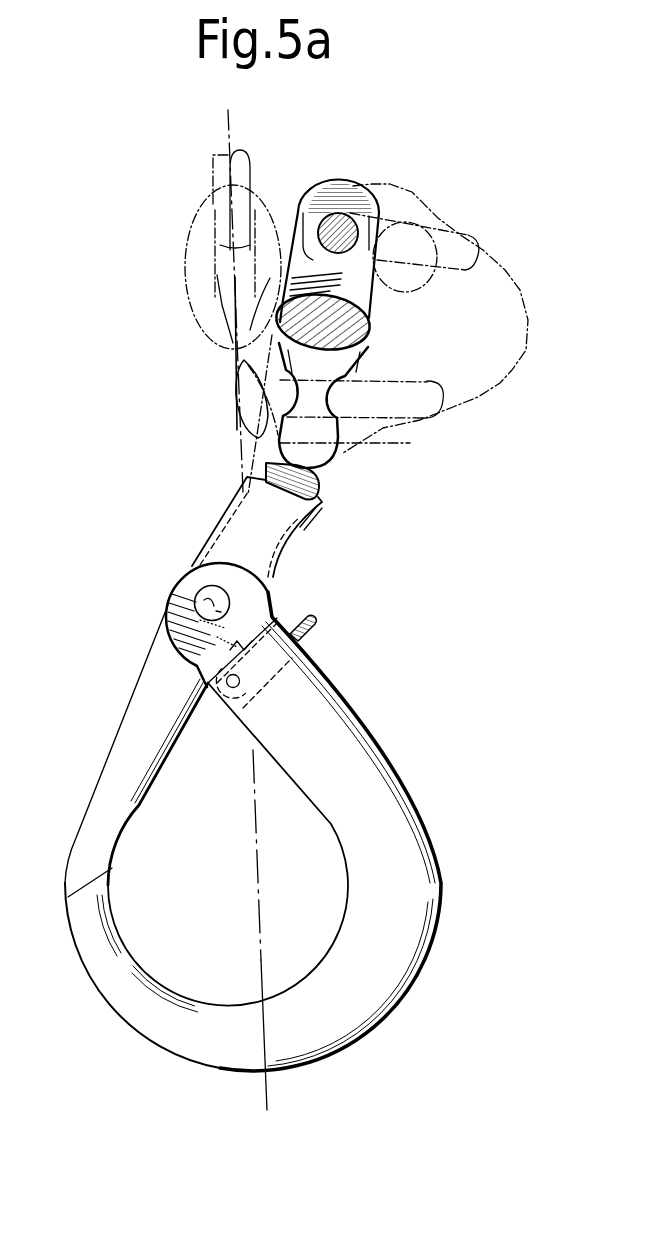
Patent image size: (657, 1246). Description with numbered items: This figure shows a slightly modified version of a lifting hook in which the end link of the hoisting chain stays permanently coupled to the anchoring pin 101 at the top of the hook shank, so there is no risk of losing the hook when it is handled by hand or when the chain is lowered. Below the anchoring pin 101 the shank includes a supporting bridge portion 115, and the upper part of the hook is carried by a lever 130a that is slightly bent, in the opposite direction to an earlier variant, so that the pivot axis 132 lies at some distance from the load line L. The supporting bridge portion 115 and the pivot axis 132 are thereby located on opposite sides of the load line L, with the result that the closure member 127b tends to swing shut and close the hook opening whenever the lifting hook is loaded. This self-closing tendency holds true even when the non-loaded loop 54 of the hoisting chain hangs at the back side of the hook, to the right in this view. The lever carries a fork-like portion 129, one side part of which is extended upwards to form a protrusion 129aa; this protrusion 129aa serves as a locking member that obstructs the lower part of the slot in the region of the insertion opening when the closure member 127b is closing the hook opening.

The anchoring pin 101 is at (352, 212).
The supporting bridge portion 115 is at (369, 322).
The non-loaded loop of the hoisting chain 54 is at (453, 407).
The protrusion 129aa is at (330, 487).
The lever 130a is at (266, 521).
The fork-like portion 129 is at (243, 601).
The pivot axis 132 is at (193, 598).
The closure member 127b is at (127, 752).
The load line L is at (255, 893).